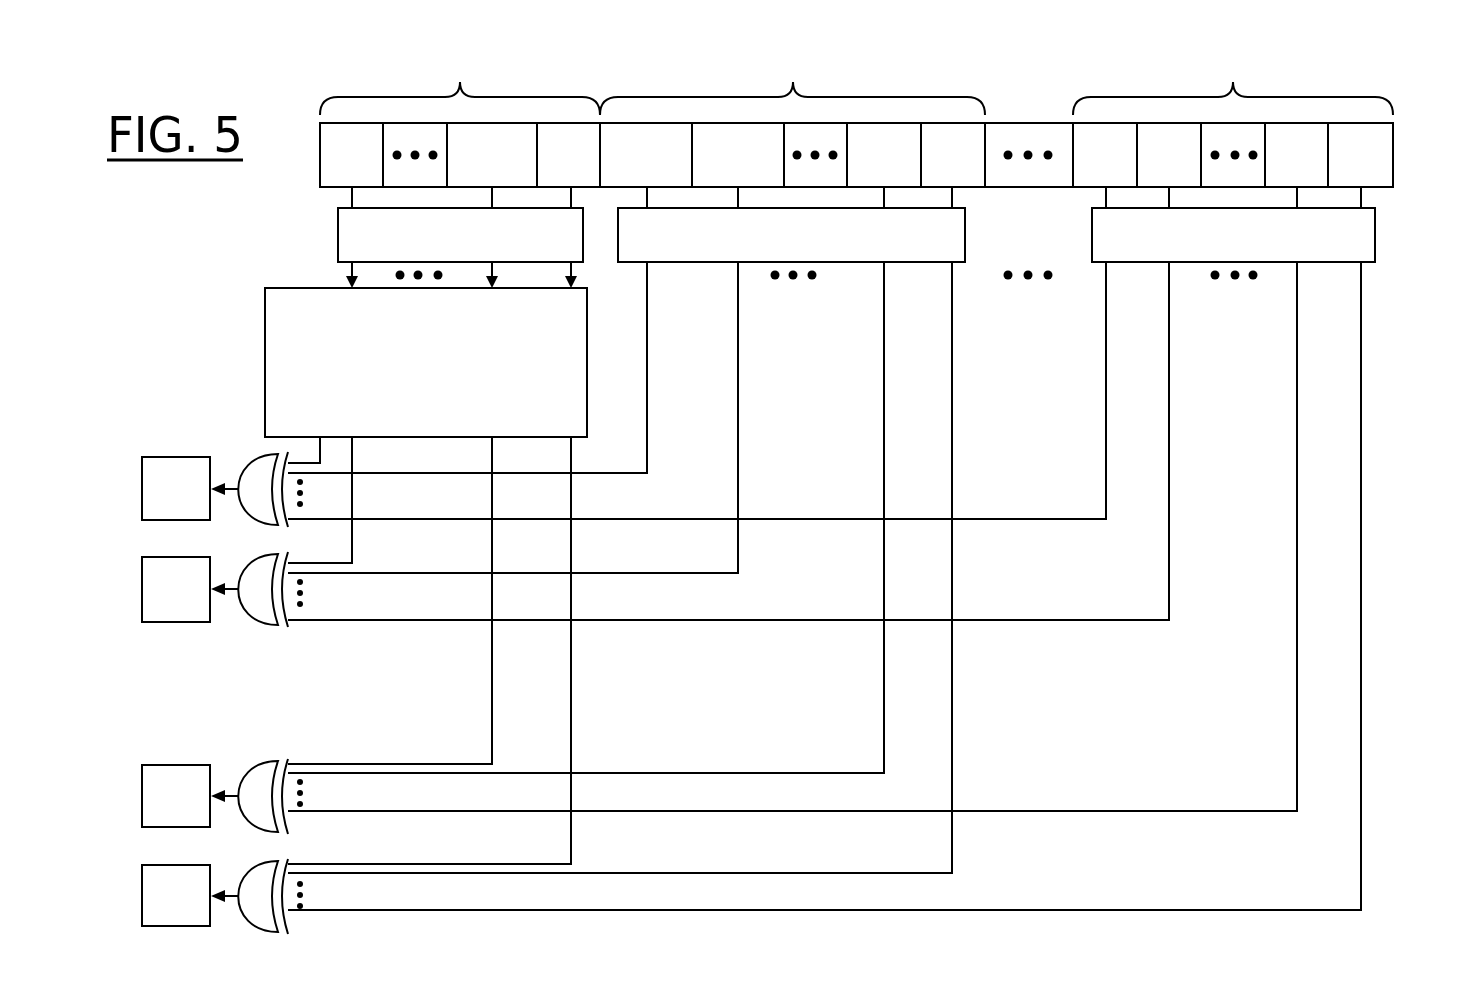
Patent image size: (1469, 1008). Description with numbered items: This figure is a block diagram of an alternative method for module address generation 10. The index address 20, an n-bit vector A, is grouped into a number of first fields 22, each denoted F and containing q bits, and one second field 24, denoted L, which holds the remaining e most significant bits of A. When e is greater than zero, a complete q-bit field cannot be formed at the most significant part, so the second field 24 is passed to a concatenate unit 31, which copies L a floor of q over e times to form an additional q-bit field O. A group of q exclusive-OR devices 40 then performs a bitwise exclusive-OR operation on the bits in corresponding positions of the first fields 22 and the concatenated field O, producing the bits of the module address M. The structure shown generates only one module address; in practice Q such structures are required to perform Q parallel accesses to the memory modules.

The module address generation 10 is at (218, 255).
The index address 20 is at (1393, 150).
The first field 22 is at (1390, 236).
The second field 24 is at (338, 238).
The concatenate unit 31 is at (265, 365).
The exclusive-OR device 40 is at (266, 458).